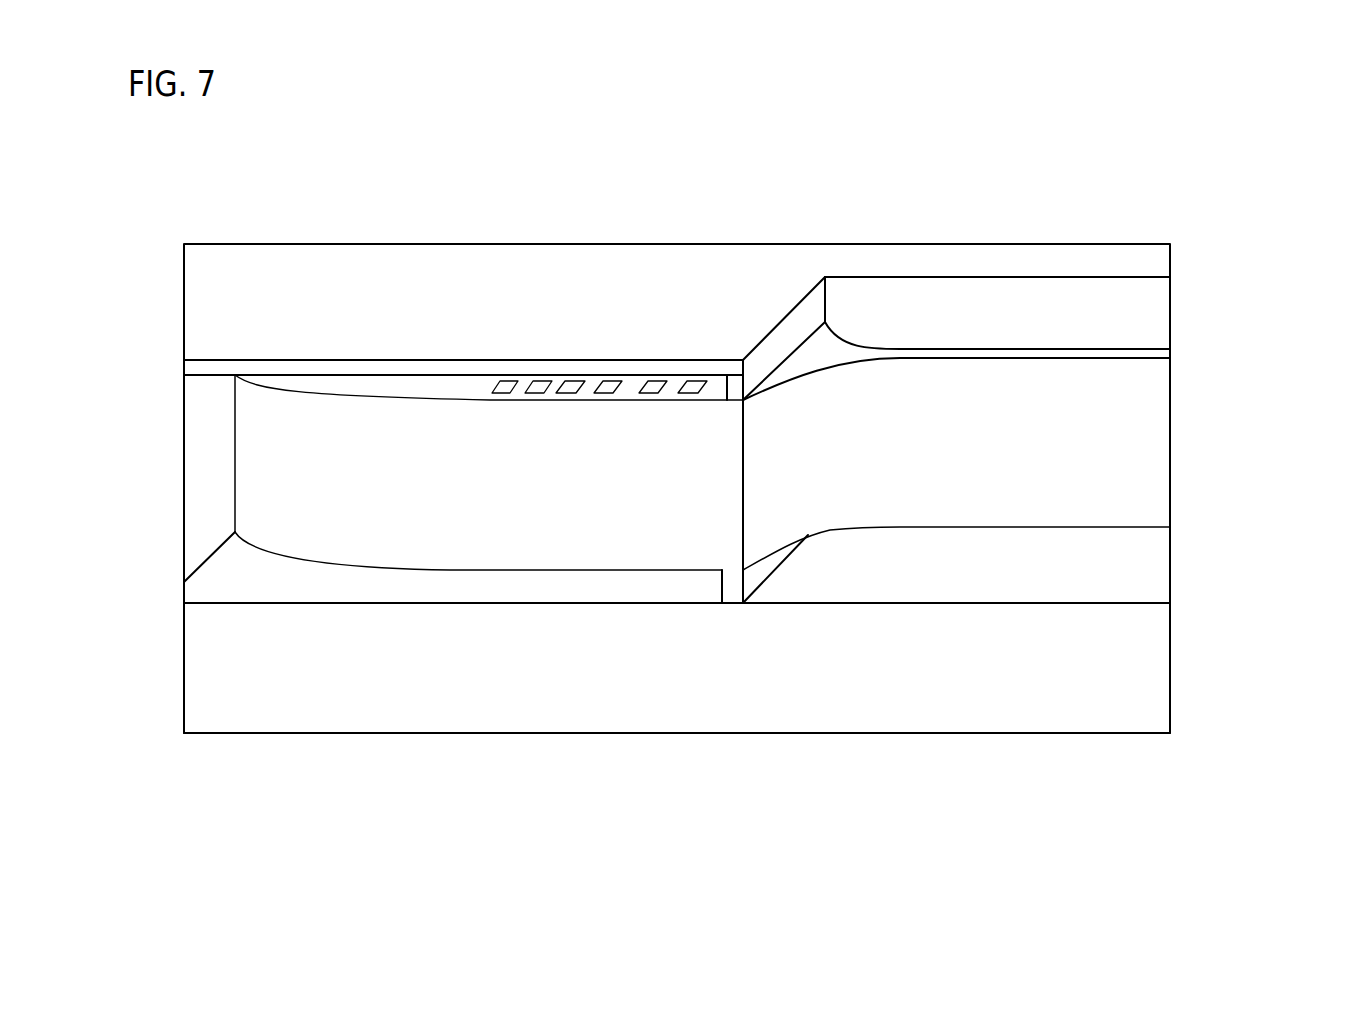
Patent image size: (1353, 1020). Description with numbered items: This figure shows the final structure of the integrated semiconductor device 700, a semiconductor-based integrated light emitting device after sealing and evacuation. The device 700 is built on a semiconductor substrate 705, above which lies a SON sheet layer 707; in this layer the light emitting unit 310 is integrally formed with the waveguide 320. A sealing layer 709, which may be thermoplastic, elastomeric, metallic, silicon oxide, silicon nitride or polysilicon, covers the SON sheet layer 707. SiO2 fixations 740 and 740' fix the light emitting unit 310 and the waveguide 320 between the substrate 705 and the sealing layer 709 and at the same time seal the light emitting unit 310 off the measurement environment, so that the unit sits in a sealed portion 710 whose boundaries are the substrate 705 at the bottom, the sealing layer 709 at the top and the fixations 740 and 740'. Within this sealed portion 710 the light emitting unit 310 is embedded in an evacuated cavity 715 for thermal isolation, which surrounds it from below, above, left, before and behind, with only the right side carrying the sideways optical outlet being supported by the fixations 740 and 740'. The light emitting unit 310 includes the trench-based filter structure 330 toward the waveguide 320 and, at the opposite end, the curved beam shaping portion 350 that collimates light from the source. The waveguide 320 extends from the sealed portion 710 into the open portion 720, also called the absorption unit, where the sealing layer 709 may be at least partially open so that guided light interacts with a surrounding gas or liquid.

The integrated semiconductor device 700 is at (1006, 161).
The sealing layer 709 is at (466, 262).
The SiO2 fixation 740' is at (955, 437).
The waveguide 320 is at (1022, 358).
The SON sheet layer 707 is at (1190, 426).
The beam shaping portion 350 is at (233, 461).
The filter structure 330 is at (611, 424).
The evacuated cavity 715 is at (243, 589).
The light emitting unit 310 is at (348, 542).
The sealed portion 710 is at (575, 588).
The SiO2 fixation 740 is at (794, 569).
The open portion 720 is at (1032, 556).
The semiconductor substrate 705 is at (607, 718).